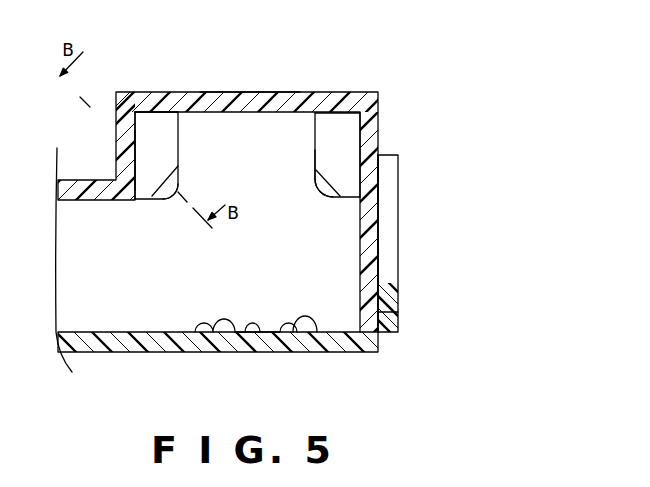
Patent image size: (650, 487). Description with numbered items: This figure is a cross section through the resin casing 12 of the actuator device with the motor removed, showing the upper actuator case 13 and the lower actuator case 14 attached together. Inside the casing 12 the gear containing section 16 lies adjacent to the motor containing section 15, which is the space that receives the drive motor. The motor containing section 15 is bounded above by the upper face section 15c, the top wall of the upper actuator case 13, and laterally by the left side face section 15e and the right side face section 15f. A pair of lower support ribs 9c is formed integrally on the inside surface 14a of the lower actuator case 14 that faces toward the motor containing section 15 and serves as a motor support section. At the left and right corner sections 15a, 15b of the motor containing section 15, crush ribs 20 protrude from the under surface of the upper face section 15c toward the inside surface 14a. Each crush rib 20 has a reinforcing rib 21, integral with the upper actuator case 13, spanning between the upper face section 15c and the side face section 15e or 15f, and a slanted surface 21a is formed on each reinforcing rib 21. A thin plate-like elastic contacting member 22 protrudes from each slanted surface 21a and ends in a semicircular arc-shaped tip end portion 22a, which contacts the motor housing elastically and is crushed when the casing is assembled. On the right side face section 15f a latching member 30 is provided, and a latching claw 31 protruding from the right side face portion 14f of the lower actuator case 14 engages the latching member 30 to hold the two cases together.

The lower support rib 9c is at (199, 325).
The casing 12 is at (507, 210).
The upper actuator case 13 is at (378, 208).
The lower actuator case 14 is at (380, 341).
The inside surface 14a is at (258, 334).
The right side face portion 14f is at (380, 260).
The motor containing section 15 is at (242, 272).
The left corner section 15a is at (142, 122).
The right corner section 15b is at (350, 117).
The upper face section 15c is at (255, 92).
The left side face section 15e is at (137, 163).
The right side face section 15f is at (380, 178).
The gear containing section 16 is at (80, 272).
The crush rib 20 is at (197, 38).
The reinforcing rib 21 is at (140, 147).
The slanted surface 21a is at (320, 168).
The elastic contacting member 22 is at (178, 178).
The tip end portion 22a is at (177, 194).
The latching member 30 is at (404, 228).
The latching claw 31 is at (383, 283).